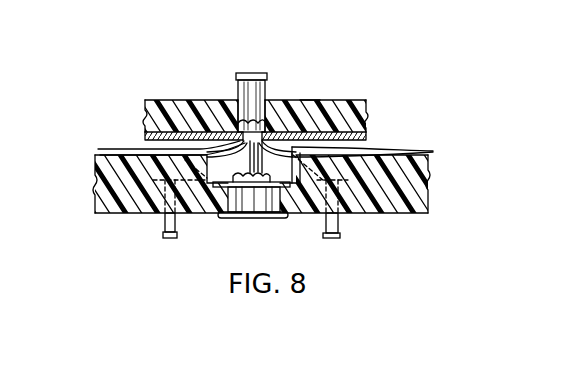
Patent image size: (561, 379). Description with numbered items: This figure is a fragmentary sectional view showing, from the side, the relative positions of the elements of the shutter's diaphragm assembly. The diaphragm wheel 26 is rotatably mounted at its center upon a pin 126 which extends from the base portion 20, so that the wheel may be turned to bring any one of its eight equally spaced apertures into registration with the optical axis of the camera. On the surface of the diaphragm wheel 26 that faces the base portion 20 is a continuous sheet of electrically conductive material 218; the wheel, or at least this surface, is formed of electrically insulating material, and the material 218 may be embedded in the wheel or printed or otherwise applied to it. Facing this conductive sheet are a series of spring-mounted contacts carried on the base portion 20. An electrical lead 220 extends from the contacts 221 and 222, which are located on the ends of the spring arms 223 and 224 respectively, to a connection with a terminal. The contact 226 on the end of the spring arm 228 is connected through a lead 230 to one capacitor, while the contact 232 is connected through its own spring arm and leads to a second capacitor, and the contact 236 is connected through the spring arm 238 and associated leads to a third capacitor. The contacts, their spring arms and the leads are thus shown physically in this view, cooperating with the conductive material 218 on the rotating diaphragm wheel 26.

The base portion 20 is at (398, 200).
The diaphragm wheel 26 is at (307, 110).
The pin 126 is at (250, 72).
The electrically conductive material 218 is at (335, 135).
The electrical lead 220 is at (164, 222).
The contact 221 is at (200, 146).
The contact 222 is at (218, 103).
The spring arm 223 is at (98, 149).
The spring arm 224 is at (222, 172).
The contact 226 is at (352, 148).
The spring arm 228 is at (428, 151).
The lead 230 is at (338, 228).
The contact 232 is at (305, 105).
The contact 236 is at (260, 132).
The spring arm 238 is at (291, 184).